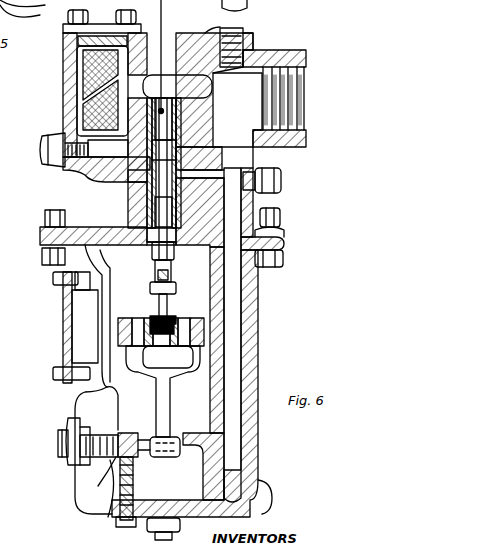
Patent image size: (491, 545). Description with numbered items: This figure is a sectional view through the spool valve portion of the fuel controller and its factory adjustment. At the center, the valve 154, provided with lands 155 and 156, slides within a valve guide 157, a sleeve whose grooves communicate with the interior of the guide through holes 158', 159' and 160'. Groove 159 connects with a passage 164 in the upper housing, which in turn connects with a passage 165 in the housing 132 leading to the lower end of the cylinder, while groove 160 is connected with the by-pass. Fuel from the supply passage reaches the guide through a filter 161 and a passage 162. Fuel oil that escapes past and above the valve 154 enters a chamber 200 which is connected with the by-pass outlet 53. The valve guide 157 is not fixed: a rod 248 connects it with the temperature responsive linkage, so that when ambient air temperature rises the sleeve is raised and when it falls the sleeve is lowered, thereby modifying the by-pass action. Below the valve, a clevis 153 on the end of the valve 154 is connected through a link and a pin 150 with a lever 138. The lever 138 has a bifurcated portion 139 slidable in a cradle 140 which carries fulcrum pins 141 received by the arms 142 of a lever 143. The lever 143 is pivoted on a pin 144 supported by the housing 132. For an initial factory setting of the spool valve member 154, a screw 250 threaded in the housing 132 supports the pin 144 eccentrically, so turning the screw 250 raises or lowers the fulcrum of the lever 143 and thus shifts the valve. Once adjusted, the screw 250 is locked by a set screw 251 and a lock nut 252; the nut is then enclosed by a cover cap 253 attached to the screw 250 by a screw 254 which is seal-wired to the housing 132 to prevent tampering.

The by-pass outlet 53 is at (302, 88).
The housing 132 is at (258, 358).
The lever 138 is at (158, 318).
The bifurcated portion 139 is at (162, 335).
The cradle 140 is at (140, 318).
The fulcrum pins 141 is at (118, 330).
The arms 142 is at (118, 346).
The lever 143 is at (160, 406).
The pin 144 is at (168, 457).
The pin 150 is at (170, 318).
The clevis 153 is at (172, 278).
The valve 154 is at (180, 242).
The land 155 is at (125, 242).
The land 156 is at (172, 138).
The valve guide 157 is at (178, 110).
The hole 158' is at (219, 98).
The groove 159 is at (127, 203).
The hole 159' is at (200, 168).
The groove 160 is at (128, 163).
The hole 160' is at (200, 212).
The filter 161 is at (92, 82).
The passage 162 is at (136, 152).
The passage 164 is at (237, 211).
The passage 165 is at (257, 322).
The chamber 200 is at (249, 19).
The rod 248 is at (161, 25).
The screw 250 is at (98, 486).
The set screw 251 is at (108, 517).
The lock nut 252 is at (75, 456).
The cover cap 253 is at (70, 421).
The screw 254 is at (60, 444).